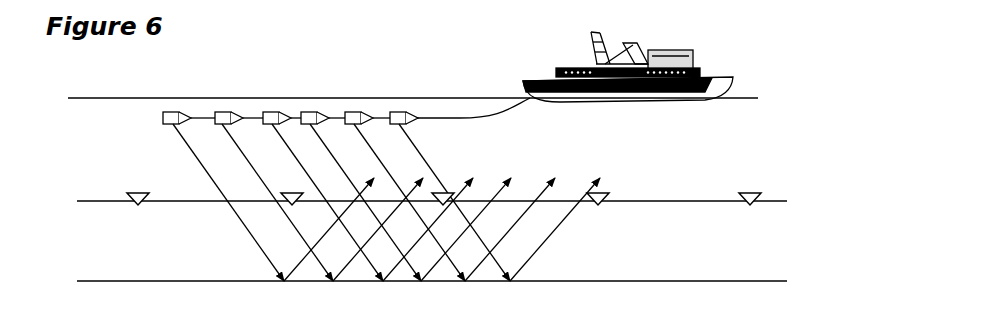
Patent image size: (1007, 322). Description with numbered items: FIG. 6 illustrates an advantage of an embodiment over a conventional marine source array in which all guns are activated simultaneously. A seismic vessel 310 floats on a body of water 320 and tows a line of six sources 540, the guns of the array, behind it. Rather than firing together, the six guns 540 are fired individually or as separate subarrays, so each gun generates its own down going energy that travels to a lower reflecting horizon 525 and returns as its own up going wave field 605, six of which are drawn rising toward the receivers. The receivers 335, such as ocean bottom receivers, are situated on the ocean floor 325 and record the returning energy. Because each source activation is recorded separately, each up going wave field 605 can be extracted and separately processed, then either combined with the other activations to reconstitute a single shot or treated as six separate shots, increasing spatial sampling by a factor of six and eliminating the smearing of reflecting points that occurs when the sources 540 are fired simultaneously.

The seismic vessel 310 is at (692, 53).
The body of water 320 is at (100, 97).
The ocean floor 325 is at (85, 198).
The receivers 335 is at (138, 206).
The subsurface reflector 525 is at (82, 279).
The sources 540 is at (309, 110).
The up going wave field 605 is at (473, 174).